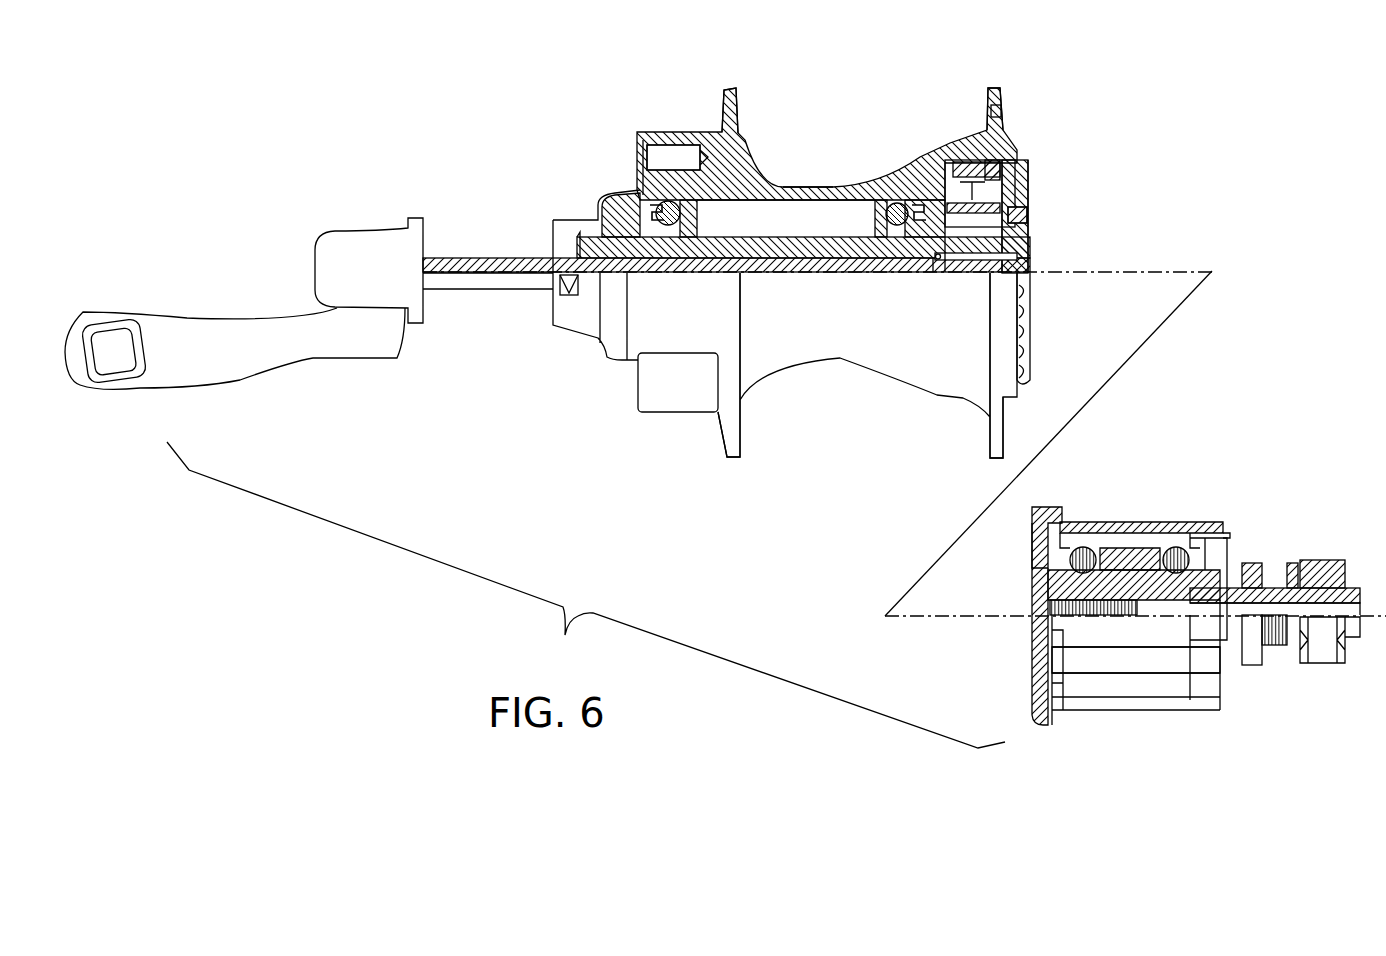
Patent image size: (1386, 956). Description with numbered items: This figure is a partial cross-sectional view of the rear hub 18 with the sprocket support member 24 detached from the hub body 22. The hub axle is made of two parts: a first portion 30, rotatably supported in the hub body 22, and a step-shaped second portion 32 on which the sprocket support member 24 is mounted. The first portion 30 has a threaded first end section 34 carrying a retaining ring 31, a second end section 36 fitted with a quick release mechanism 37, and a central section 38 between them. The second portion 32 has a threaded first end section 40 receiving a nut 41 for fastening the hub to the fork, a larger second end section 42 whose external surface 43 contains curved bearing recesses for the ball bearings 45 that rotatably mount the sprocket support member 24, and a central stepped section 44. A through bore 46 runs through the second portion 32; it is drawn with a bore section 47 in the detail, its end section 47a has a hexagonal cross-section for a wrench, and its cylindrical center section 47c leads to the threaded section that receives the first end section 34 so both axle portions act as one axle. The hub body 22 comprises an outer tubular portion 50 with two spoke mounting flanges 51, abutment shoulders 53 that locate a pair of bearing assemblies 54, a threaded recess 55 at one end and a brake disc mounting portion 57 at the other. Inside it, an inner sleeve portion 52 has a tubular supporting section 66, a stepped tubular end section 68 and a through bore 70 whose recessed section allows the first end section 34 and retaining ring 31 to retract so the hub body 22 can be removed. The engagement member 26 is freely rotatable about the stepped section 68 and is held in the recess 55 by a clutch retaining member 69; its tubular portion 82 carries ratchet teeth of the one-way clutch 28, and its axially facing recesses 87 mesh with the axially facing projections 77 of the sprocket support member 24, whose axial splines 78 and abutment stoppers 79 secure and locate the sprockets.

The rear hub 18 is at (1172, 165).
The hub body 22 is at (826, 158).
The sprocket support member 24 is at (1135, 697).
The engagement member 26 is at (1031, 197).
The one-way clutch 28 is at (1033, 179).
The first portion 30 is at (478, 258).
The retaining ring 31 is at (935, 258).
The second portion 32 is at (1278, 585).
The first end section 34 is at (953, 270).
The second end section 36 is at (440, 257).
The quick release mechanism 37 is at (332, 230).
The central section 38 is at (753, 260).
The first end section 40 is at (1350, 637).
The nut 41 is at (1325, 560).
The second end section 42 is at (1105, 590).
The external surface 43 is at (1112, 590).
The central stepped section 44 is at (1247, 562).
The ball bearings 45 is at (1078, 547).
The through bore 46 is at (1158, 590).
The threaded portion 47 is at (1080, 604).
The end section 47a is at (1360, 600).
The cylindrical center section 47c is at (1195, 640).
The outer tubular portion 50 is at (785, 175).
The spoke mounting flanges 51 is at (736, 88).
The inner sleeve portion 52 is at (843, 230).
The abutment shoulders 53 is at (650, 193).
The bearing assemblies 54 is at (880, 182).
The recess 55 is at (942, 162).
The brake disc mounting portion 57 is at (660, 133).
The tubular supporting section 66 is at (720, 252).
The stepped tubular end section 68 is at (987, 275).
The clutch retaining member 69 is at (1030, 215).
The through bore 70 is at (1030, 265).
The axially facing projections 77 is at (1032, 685).
The axial splines 78 is at (1182, 690).
The abutment stopper 79 is at (1057, 720).
The tubular portion 82 is at (1005, 158).
The axially extending recesses 87 is at (1030, 350).